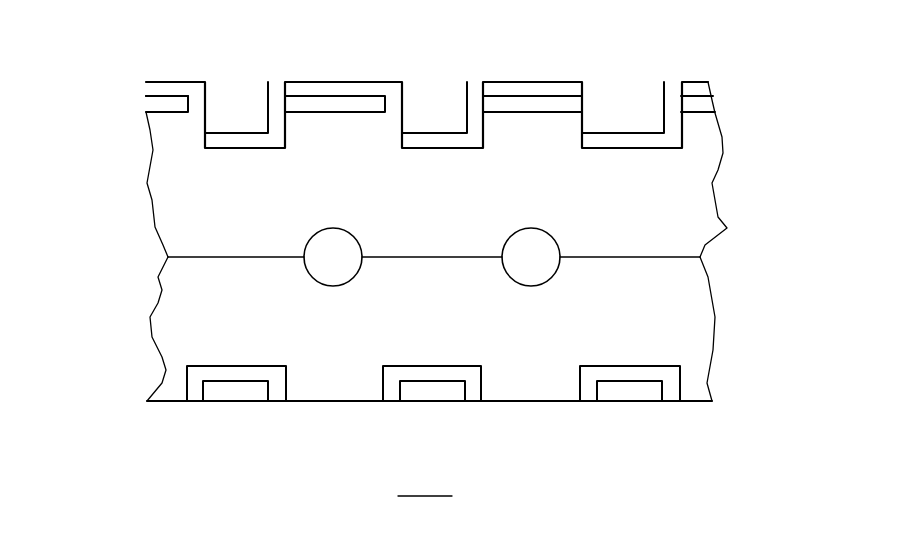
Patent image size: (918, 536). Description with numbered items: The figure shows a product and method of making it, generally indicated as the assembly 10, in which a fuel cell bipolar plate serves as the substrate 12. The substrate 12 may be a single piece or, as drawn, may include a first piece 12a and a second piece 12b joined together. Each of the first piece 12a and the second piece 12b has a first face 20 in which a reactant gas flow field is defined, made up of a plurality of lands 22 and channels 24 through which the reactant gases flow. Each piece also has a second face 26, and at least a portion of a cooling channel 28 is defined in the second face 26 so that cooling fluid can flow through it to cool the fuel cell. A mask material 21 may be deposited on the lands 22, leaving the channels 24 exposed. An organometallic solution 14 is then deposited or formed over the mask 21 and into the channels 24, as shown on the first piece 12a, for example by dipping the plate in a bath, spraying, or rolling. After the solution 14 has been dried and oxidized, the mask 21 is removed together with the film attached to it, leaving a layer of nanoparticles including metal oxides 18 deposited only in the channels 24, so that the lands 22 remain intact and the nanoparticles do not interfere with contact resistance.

The substrate assembly 10 is at (138, 45).
The substrate 12 is at (385, 241).
The first piece 12a is at (177, 174).
The second piece 12b is at (177, 320).
The organometallic solution 14 is at (352, 90).
The layer of film including nanoparticles including a metallic oxide 18 is at (218, 373).
The first face 20 is at (161, 102).
The mask material 21 is at (178, 102).
The lands 22 is at (171, 102).
The channels 24 is at (240, 126).
The second face 26 is at (456, 256).
The cooling channel 28 is at (353, 228).